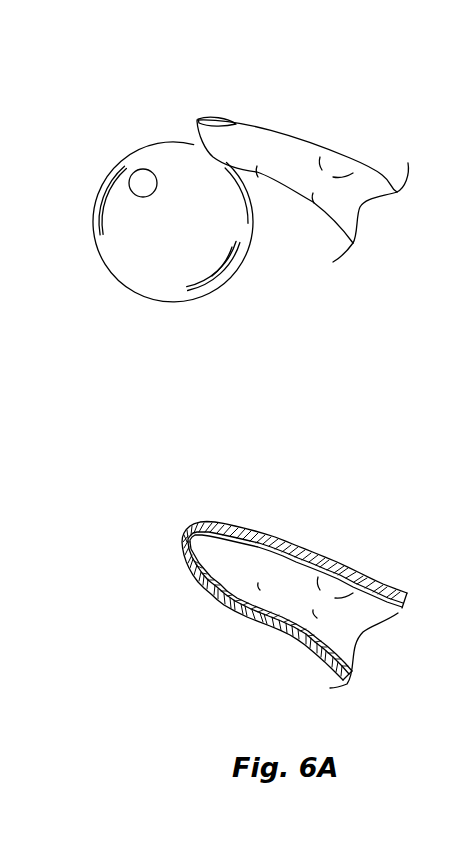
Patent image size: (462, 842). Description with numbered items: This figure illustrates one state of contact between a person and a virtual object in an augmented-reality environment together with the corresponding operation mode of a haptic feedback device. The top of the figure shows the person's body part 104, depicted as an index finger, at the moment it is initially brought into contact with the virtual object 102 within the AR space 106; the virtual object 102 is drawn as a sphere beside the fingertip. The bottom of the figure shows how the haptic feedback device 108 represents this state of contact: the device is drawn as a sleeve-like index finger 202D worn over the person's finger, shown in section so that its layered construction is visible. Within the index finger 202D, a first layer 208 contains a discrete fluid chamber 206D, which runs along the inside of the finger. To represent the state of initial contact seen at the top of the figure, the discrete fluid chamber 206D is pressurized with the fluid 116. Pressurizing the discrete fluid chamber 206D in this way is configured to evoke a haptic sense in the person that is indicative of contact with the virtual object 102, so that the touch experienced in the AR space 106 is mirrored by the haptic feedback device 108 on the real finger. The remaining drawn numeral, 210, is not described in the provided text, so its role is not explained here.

The AR space 106 is at (123, 111).
The virtual object 102 is at (112, 170).
The person's body part 104 is at (282, 132).
The haptic feedback device 108 is at (187, 527).
The first layer 208 is at (185, 553).
The index finger 202D is at (150, 567).
The tip cavity 210 is at (183, 570).
The discrete fluid chamber 206D is at (220, 606).
The fluid 116 is at (268, 625).